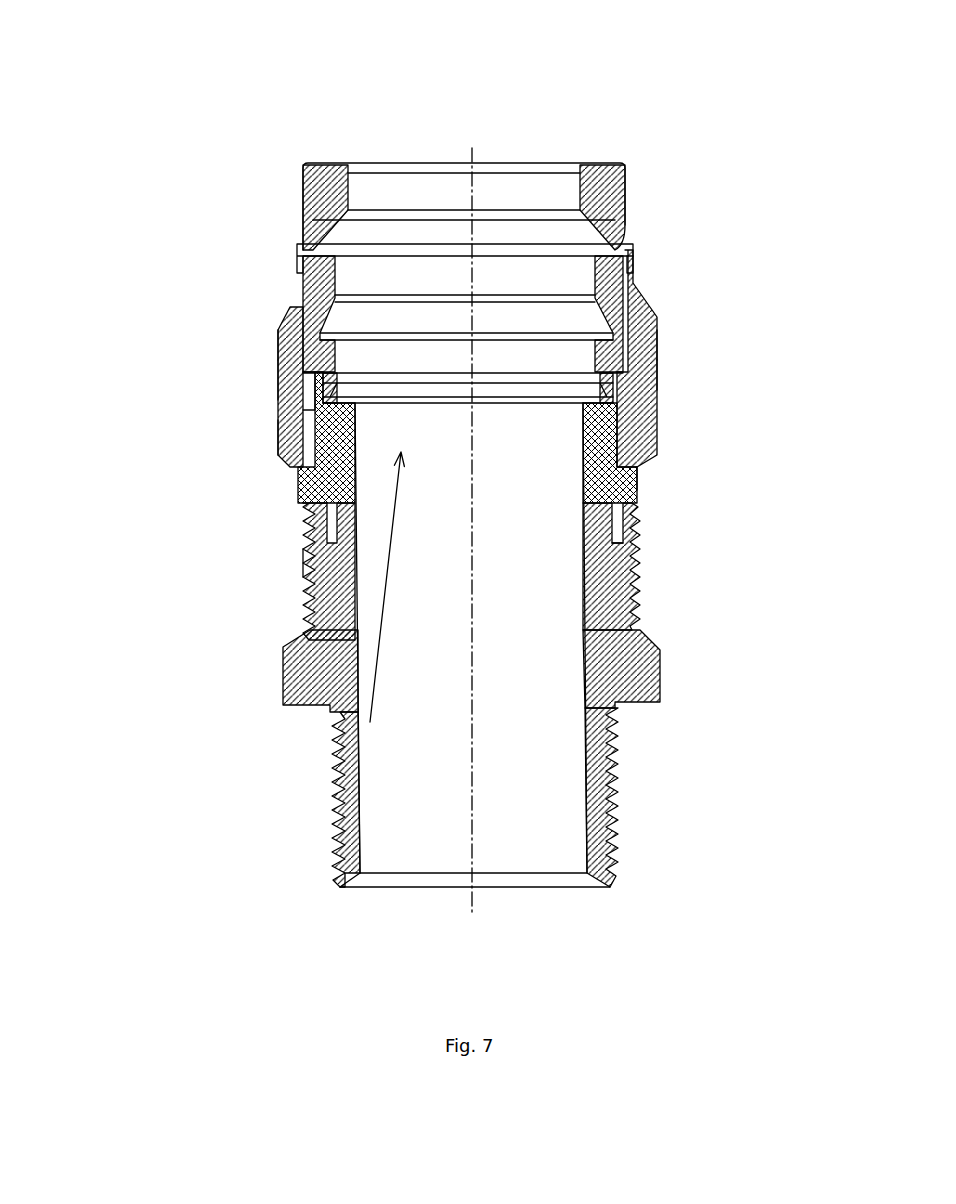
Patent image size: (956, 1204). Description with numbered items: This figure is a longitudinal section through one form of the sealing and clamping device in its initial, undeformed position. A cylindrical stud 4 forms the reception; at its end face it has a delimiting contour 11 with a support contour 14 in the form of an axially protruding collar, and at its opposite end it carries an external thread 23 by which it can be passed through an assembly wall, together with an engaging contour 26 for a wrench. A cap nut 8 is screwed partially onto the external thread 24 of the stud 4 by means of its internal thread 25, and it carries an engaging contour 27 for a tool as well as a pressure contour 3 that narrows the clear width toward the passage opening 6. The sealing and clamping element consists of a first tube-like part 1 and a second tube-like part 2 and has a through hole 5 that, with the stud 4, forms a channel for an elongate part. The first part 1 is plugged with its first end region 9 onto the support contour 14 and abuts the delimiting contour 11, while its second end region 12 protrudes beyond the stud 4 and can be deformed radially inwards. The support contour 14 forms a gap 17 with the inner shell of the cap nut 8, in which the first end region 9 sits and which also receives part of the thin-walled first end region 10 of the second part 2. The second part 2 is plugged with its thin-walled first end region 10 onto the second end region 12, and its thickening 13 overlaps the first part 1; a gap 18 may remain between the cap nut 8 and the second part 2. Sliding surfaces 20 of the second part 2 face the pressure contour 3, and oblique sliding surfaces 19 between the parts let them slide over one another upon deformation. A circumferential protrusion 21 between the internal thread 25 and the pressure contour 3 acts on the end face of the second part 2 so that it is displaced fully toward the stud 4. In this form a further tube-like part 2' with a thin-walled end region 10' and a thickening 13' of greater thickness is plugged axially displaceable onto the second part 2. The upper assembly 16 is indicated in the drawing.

The first tube-like part 1 is at (300, 470).
The second tube-like part 2 is at (202, 359).
The further tube-like part 2' is at (201, 353).
The pressure contour 3 is at (628, 175).
The stud 4 is at (221, 800).
The through hole 5 is at (338, 880).
The passage opening 6 is at (560, 495).
The cap nut 8 is at (303, 195).
The first end region of the first part 9 is at (302, 530).
The thin-walled first end region of the second part 10 is at (711, 483).
The thin-walled first end region of the further part 10' is at (723, 338).
The delimiting contour 11 is at (302, 552).
The second end region of the first part 12 is at (298, 405).
The thickening 13 is at (718, 371).
The thickening of the further part 13' is at (706, 345).
The support contour 14 is at (628, 543).
The valve unit 16 is at (368, 143).
The gap 17 is at (628, 513).
The gap 18 is at (300, 272).
The oblique sliding surfaces 19 is at (652, 406).
The sliding surfaces 20 is at (625, 245).
The circumferential protrusion 21 is at (296, 256).
The external thread 23 is at (618, 738).
The external thread 24 is at (300, 593).
The internal thread 25 is at (297, 432).
The engaging contour 26 is at (660, 665).
The engaging contour 27 is at (297, 345).